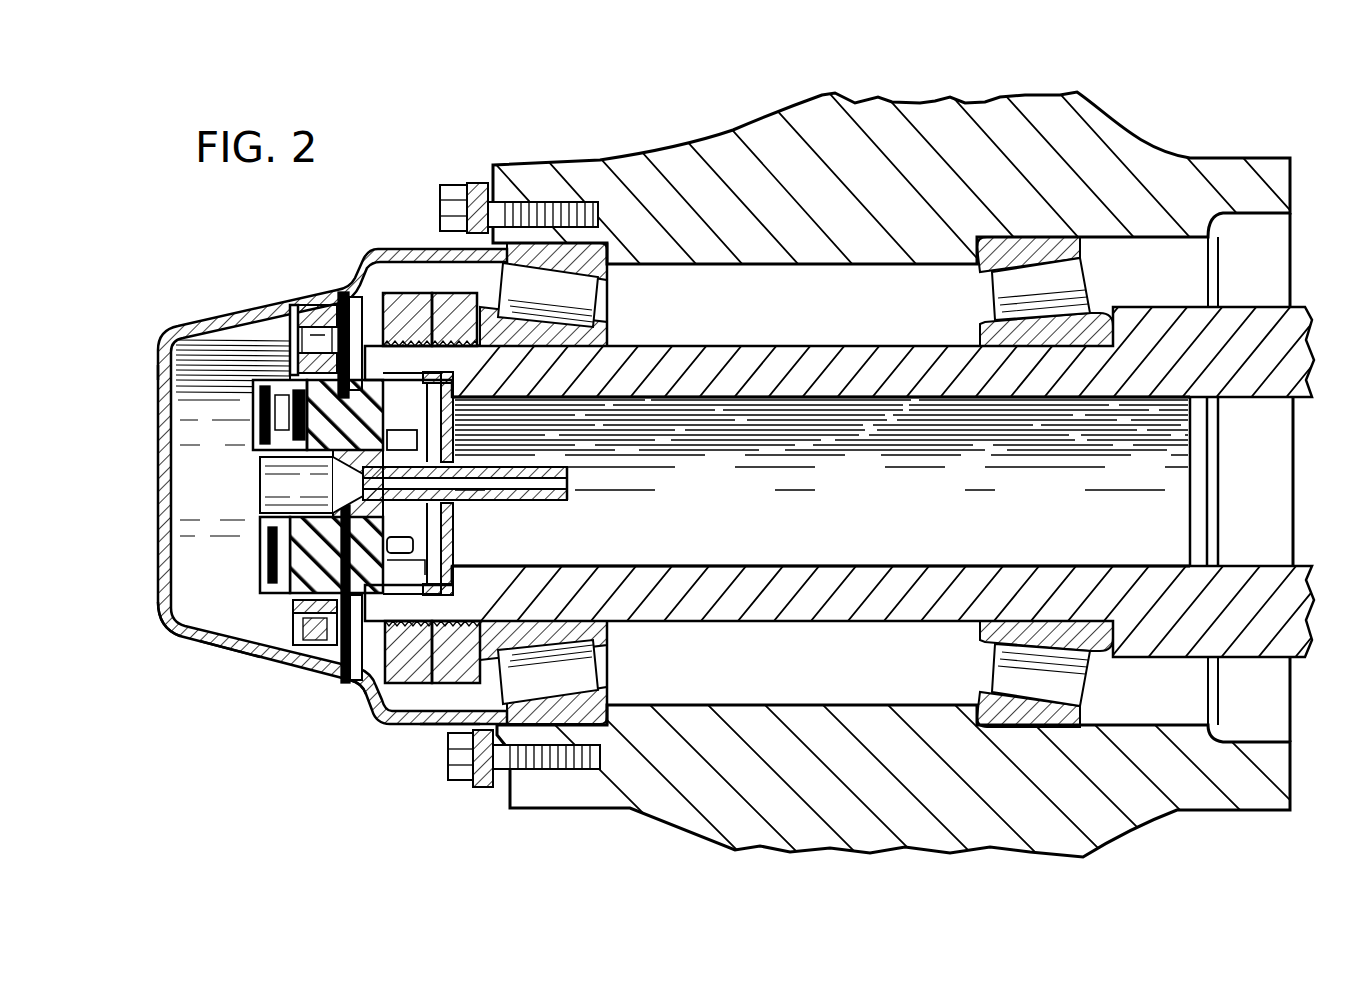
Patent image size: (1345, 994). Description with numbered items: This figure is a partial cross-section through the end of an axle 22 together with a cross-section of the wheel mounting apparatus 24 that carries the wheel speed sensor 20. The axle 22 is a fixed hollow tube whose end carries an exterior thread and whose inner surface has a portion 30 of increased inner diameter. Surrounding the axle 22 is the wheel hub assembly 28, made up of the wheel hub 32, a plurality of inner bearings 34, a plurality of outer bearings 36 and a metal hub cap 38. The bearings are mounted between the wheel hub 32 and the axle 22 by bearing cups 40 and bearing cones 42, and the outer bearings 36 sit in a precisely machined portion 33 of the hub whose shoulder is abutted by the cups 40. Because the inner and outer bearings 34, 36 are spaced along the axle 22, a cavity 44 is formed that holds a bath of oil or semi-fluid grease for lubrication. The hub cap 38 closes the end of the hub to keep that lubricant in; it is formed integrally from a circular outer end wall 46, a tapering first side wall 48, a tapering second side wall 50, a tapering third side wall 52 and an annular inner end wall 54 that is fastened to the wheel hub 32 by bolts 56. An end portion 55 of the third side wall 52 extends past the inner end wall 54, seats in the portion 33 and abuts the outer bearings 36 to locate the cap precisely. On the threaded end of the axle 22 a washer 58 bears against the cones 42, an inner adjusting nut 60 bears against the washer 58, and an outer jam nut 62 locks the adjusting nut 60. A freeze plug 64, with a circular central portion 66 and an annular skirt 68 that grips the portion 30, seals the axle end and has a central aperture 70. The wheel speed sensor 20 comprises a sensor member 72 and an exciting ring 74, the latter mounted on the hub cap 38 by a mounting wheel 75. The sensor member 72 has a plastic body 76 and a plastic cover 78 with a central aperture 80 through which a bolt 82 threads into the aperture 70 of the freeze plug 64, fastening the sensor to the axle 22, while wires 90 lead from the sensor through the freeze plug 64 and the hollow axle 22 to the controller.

The wheel speed sensor 20 is at (285, 335).
The axle 22 is at (873, 398).
The wheel mounting apparatus 24 is at (884, 458).
The wheel hub assembly 28 is at (322, 513).
The portion 30 is at (442, 557).
The wheel hub 32 is at (760, 135).
The portion 33 is at (588, 770).
The inner bearings 34 is at (1010, 290).
The outer bearings 36 is at (580, 284).
The hub cap 38 is at (150, 347).
The bearing cups 40 is at (618, 264).
The bearing cones 42 is at (612, 338).
The cavity 44 is at (800, 310).
The outer end wall 46 is at (162, 605).
The first side wall 48 is at (240, 663).
The second side wall 50 is at (308, 683).
The third side wall 52 is at (385, 728).
The inner end wall 54 is at (482, 780).
The end portion 55 is at (514, 780).
The bolts 56 is at (455, 760).
The washer 58 is at (462, 200).
The inner adjusting nut 60 is at (452, 298).
The outer jam nut 62 is at (398, 306).
The freeze plug 64 is at (452, 449).
The central portion 66 is at (458, 520).
The annular skirt 68 is at (518, 582).
The central aperture 70 is at (510, 494).
The sensor member 72 is at (320, 312).
The exciting ring 74 is at (287, 407).
The mounting wheel 75 is at (285, 320).
The body 76 is at (292, 602).
The cover 78 is at (280, 532).
The central aperture 80 is at (268, 472).
The bolt 82 is at (570, 470).
The wires 90 is at (406, 428).